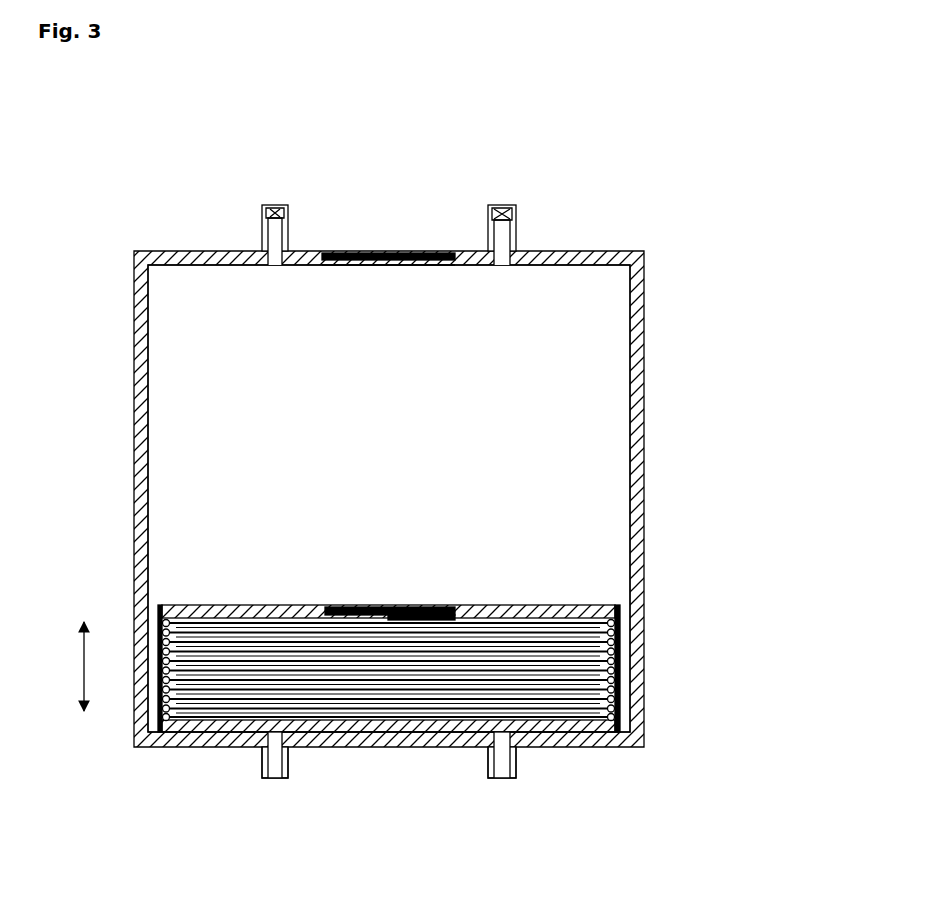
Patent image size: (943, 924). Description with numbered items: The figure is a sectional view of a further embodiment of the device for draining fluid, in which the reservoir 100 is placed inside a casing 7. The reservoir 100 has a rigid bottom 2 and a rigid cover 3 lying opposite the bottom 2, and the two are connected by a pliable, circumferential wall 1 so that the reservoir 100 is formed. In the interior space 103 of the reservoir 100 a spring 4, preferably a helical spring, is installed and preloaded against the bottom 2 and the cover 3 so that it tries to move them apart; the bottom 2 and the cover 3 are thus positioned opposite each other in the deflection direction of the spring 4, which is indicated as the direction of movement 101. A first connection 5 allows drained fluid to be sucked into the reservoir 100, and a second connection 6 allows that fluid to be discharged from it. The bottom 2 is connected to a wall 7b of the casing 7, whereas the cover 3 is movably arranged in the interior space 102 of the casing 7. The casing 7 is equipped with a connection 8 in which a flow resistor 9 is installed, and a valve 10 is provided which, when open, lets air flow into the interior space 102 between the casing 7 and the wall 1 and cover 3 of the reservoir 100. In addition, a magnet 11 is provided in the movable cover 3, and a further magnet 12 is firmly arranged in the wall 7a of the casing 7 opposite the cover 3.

The pliable circumferential wall 1 is at (617, 621).
The rigid bottom 2 is at (603, 722).
The rigid cover 3 is at (612, 608).
The spring 4 is at (615, 650).
The first connection 5 is at (272, 772).
The second connection 6 is at (500, 772).
The casing 7 is at (637, 364).
The casing wall 7a is at (207, 252).
The casing wall 7b is at (578, 748).
The connection 8 is at (272, 247).
The flow resistor 9 is at (288, 212).
The valve 10 is at (516, 218).
The magnet 11 is at (386, 605).
The magnet 12 is at (380, 265).
The reservoir 100 is at (452, 592).
The direction of movement 101 is at (57, 666).
The interior space of the casing 102 is at (307, 401).
The interior space of the reservoir 103 is at (303, 630).